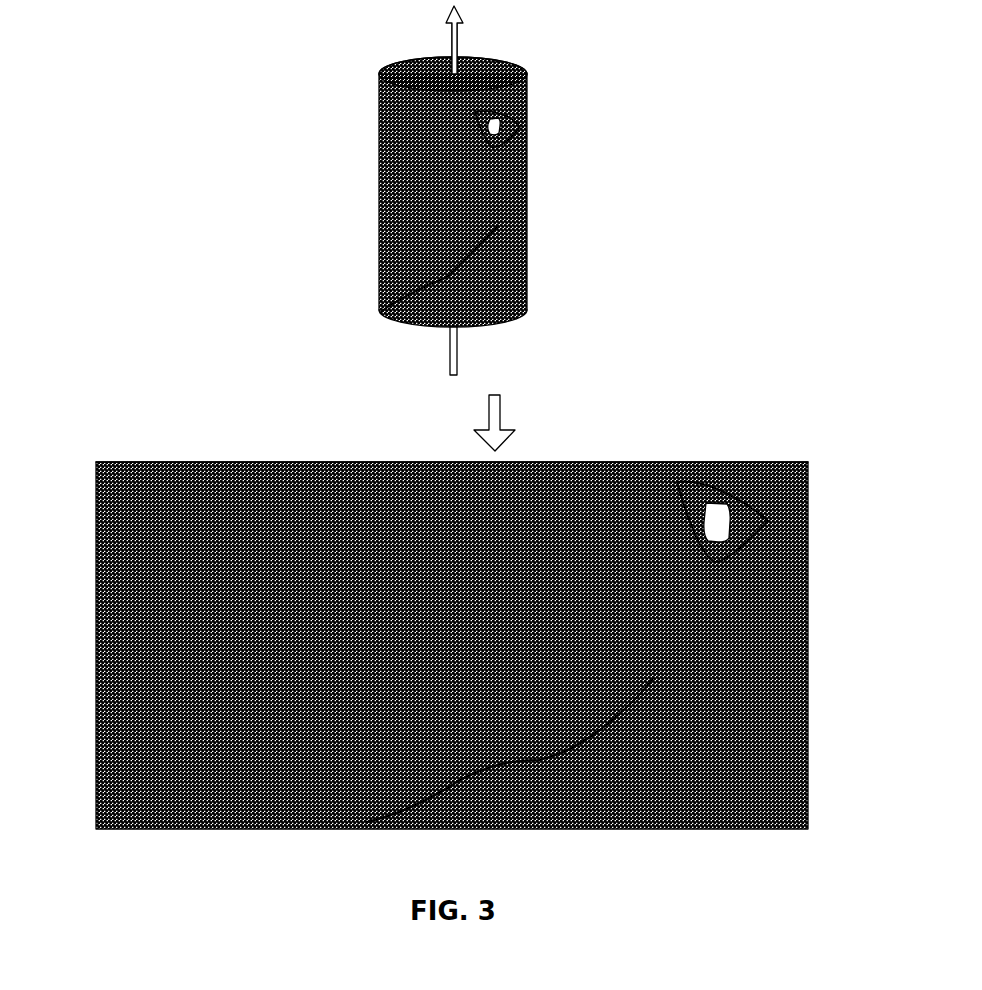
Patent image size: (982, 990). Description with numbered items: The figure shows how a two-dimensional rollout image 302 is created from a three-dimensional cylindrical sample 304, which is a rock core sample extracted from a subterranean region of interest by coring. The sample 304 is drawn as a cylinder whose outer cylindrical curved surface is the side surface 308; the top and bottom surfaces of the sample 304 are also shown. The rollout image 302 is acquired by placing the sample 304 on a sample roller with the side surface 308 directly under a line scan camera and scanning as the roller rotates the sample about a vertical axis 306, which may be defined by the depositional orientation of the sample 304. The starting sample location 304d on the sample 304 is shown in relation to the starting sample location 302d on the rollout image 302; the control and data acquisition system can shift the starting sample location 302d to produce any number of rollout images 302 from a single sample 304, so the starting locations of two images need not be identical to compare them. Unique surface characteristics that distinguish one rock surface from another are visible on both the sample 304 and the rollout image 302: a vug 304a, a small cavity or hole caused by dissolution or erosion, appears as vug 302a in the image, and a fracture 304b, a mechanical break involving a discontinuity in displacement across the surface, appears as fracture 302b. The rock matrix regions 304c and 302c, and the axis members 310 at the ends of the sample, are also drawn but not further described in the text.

The rollout image 302 is at (75, 462).
The vug 302a is at (768, 521).
The fracture 302b is at (570, 750).
The matrix of processed sample 302c is at (772, 618).
The starting sample location 302d is at (115, 455).
The sample 304 is at (367, 192).
The vug 304a is at (520, 127).
The fracture 304b is at (500, 236).
The matrix of cylindrical sample 304c is at (487, 178).
The starting sample location 304d is at (397, 58).
The vertical axis 306 is at (462, 47).
The side surface 308 is at (283, 310).
The axis rod 310 is at (515, 72).